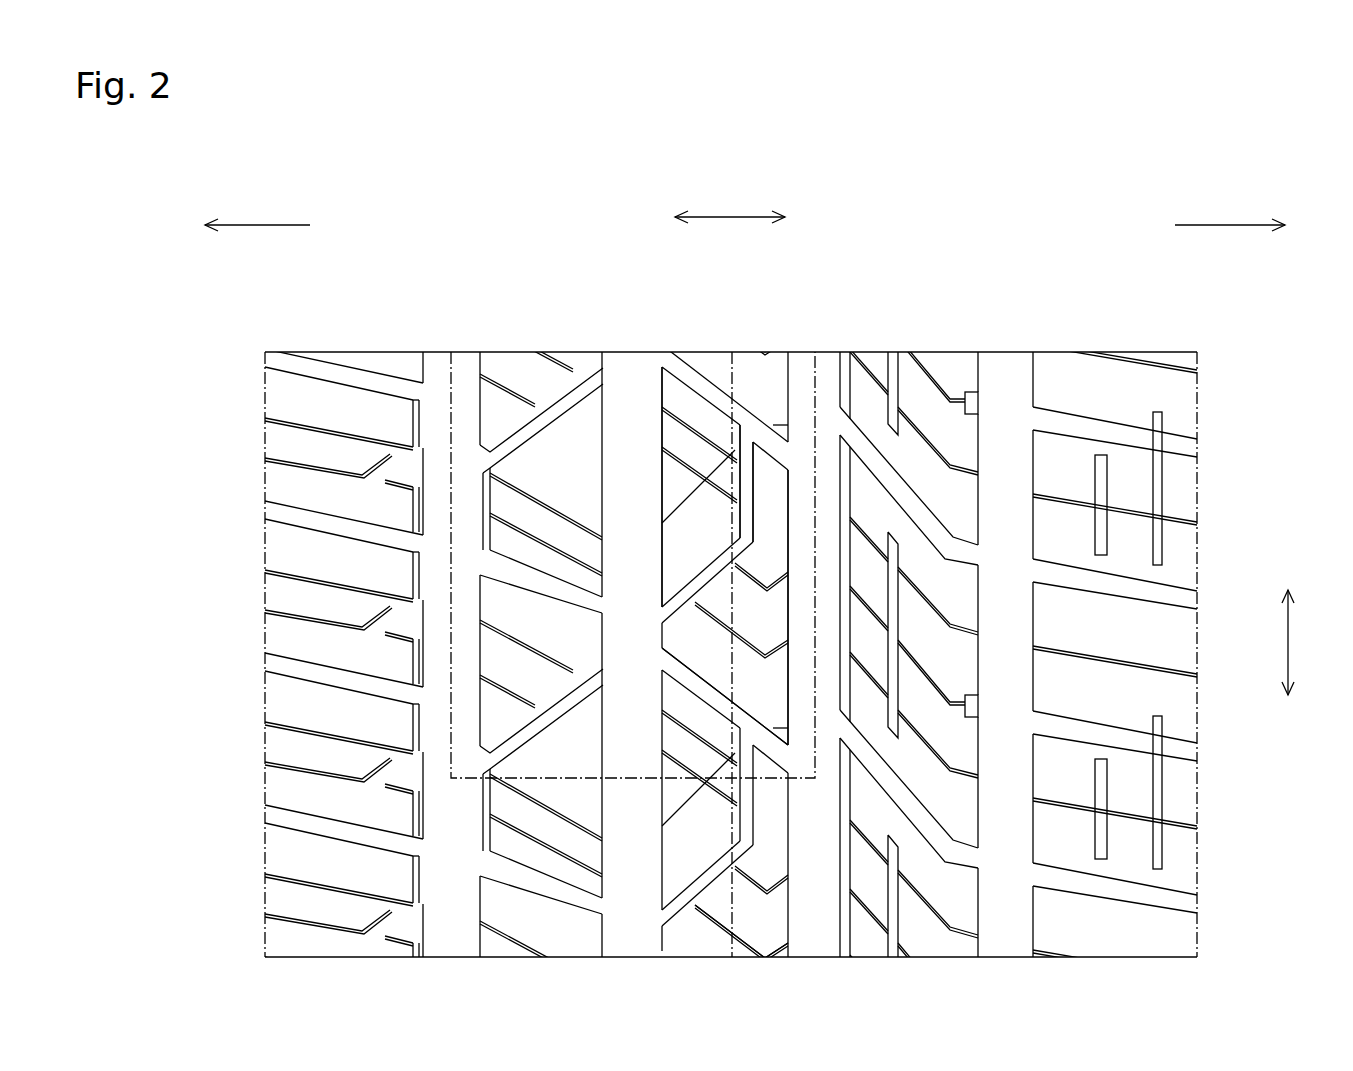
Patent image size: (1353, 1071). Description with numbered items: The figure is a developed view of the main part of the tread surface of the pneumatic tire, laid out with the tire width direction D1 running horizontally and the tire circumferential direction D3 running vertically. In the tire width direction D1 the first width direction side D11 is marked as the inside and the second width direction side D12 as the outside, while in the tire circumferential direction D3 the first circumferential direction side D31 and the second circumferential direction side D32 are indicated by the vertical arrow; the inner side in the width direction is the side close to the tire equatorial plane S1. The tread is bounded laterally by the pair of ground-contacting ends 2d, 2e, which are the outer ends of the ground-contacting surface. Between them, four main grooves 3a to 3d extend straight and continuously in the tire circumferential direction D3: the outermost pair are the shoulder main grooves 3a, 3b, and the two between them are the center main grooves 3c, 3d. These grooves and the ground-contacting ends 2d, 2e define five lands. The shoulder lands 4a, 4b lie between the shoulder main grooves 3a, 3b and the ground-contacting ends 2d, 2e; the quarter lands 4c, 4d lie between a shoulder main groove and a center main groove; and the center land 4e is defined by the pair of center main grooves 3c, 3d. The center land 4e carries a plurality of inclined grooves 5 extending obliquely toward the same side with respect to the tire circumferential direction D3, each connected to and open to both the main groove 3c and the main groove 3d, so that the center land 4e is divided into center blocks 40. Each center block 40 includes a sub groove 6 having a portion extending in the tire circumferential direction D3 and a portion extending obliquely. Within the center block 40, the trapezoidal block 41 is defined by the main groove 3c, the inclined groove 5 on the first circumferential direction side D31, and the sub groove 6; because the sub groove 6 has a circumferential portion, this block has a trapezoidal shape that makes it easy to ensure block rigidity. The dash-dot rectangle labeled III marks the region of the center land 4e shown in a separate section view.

The ground-contacting end 2d is at (262, 408).
The ground-contacting end 2e is at (1200, 408).
The shoulder main groove 3a is at (451, 378).
The shoulder main groove 3b is at (1004, 382).
The center main groove 3c is at (632, 380).
The center main groove 3d is at (816, 380).
The shoulder land 4a is at (420, 326).
The shoulder land 4b is at (1195, 326).
The quarter land 4c is at (600, 326).
The quarter land 4d is at (975, 326).
The center land 4e is at (788, 326).
The center block 40 is at (790, 604).
The trapezoidal block 41 is at (658, 490).
The inclined groove 5 is at (670, 670).
The sub groove 6 is at (743, 553).
The tire equatorial plane S1 is at (737, 922).
The section region III is at (628, 782).
The tire width direction D1 is at (730, 209).
The first width direction side D11 is at (232, 216).
The second width direction side D12 is at (1248, 216).
The tire circumferential direction D3 is at (1302, 642).
The first circumferential direction side D31 is at (1291, 575).
The circumferential direction other side D32 is at (1291, 710).